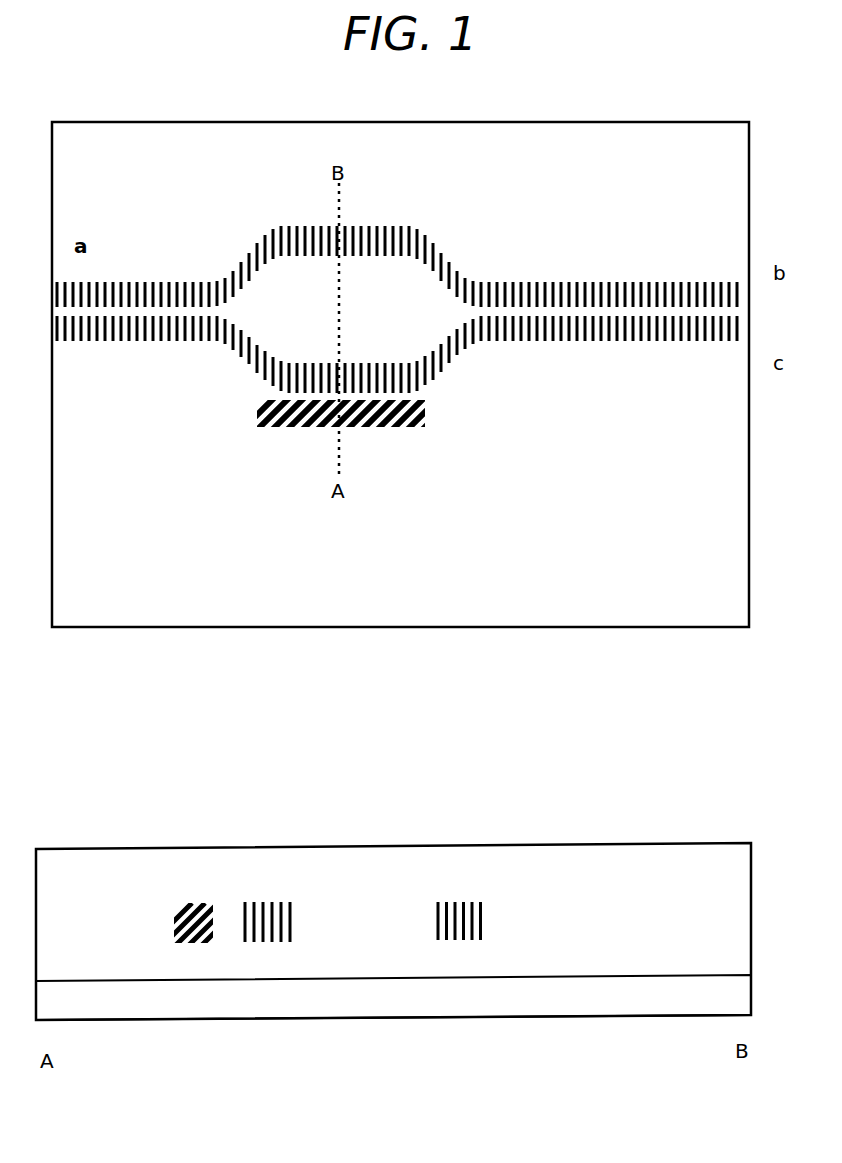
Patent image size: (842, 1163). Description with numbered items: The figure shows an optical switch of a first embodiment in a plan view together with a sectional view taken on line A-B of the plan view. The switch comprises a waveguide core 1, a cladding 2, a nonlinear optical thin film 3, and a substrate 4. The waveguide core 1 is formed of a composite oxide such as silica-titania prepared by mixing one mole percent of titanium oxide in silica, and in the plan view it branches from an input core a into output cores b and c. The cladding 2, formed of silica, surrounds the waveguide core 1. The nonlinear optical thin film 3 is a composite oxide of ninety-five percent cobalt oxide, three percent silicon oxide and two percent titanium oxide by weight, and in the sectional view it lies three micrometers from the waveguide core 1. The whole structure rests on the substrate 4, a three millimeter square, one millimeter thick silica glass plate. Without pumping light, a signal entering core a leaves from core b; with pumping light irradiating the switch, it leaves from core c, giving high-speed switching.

The waveguide core 1 is at (91, 335).
The cladding 2 is at (695, 527).
The nonlinear optical thin film 3 is at (277, 425).
The substrate 4 is at (586, 1000).